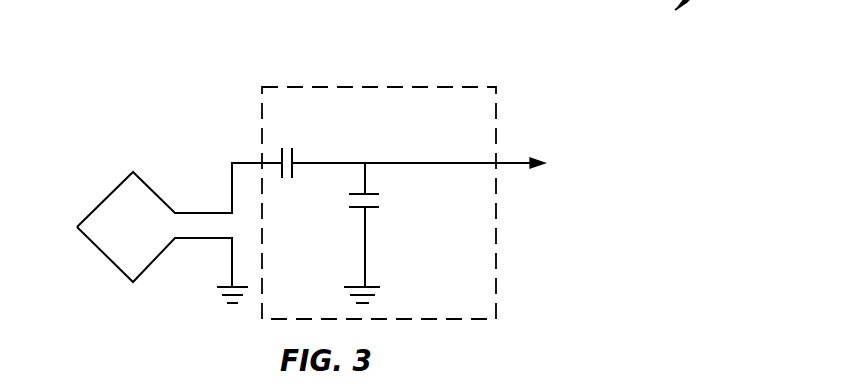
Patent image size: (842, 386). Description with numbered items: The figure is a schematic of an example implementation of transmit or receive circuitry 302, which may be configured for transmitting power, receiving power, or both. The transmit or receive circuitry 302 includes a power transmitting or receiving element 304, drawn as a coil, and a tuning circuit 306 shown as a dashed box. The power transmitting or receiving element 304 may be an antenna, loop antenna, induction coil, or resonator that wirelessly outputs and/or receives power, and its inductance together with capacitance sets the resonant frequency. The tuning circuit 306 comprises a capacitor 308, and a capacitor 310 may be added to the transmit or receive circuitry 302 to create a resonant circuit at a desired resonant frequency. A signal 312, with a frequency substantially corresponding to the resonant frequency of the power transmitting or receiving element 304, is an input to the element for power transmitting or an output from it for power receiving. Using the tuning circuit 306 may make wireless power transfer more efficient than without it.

The transmit or receive circuitry 302 is at (175, 123).
The power transmitting or receiving element 304 is at (106, 200).
The tuning circuit 306 is at (478, 85).
The capacitor 308 is at (293, 150).
The capacitor 310 is at (372, 208).
The signal 312 is at (398, 163).